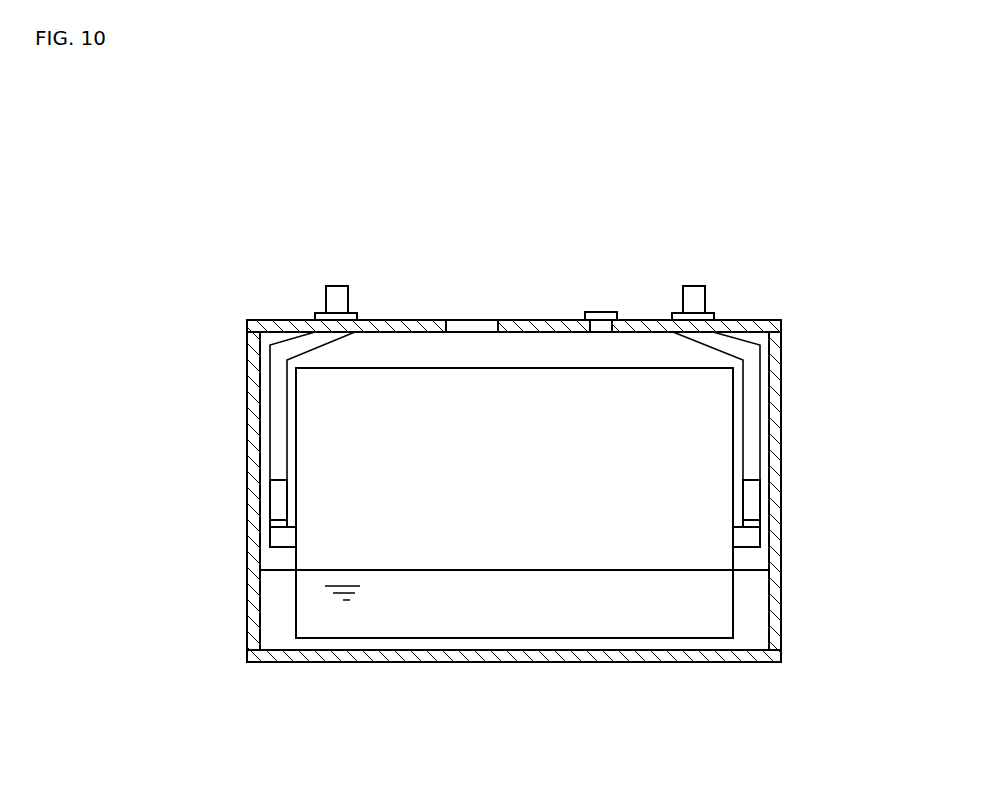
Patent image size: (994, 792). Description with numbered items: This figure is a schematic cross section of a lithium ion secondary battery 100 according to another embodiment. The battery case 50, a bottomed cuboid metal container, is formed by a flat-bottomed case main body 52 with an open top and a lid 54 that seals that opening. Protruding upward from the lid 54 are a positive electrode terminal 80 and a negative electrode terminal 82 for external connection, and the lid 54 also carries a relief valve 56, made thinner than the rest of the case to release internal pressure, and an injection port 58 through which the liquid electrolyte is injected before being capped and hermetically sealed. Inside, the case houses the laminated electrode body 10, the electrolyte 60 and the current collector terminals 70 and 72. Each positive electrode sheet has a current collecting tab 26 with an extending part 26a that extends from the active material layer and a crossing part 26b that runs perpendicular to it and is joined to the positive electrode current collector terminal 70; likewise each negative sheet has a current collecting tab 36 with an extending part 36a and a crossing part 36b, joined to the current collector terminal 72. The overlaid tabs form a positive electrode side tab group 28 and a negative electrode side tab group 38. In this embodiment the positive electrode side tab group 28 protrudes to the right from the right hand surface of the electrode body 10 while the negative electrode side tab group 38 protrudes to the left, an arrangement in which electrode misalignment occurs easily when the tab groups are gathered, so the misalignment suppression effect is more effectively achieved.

The battery 100 is at (831, 225).
The electrode body 10 is at (665, 428).
The current collecting tab 26 is at (748, 548).
The positive electrode side tab group 28 is at (804, 567).
The extending part 26a is at (752, 538).
The crossing part 26b is at (752, 509).
The current collecting tab 36 is at (280, 548).
The negative electrode side tab group 38 is at (227, 571).
The extending part 36a is at (280, 538).
The crossing part 36b is at (277, 507).
The battery case 50 is at (248, 393).
The case main body 52 is at (776, 378).
The lid 54 is at (272, 320).
The relief valve 56 is at (470, 320).
The injection port 58 is at (601, 312).
The electrolyte 60 is at (630, 622).
The positive electrode current collector terminal 70 is at (750, 493).
The current collector terminal 72 is at (277, 491).
The positive electrode terminal 80 is at (692, 287).
The negative electrode terminal 82 is at (337, 286).